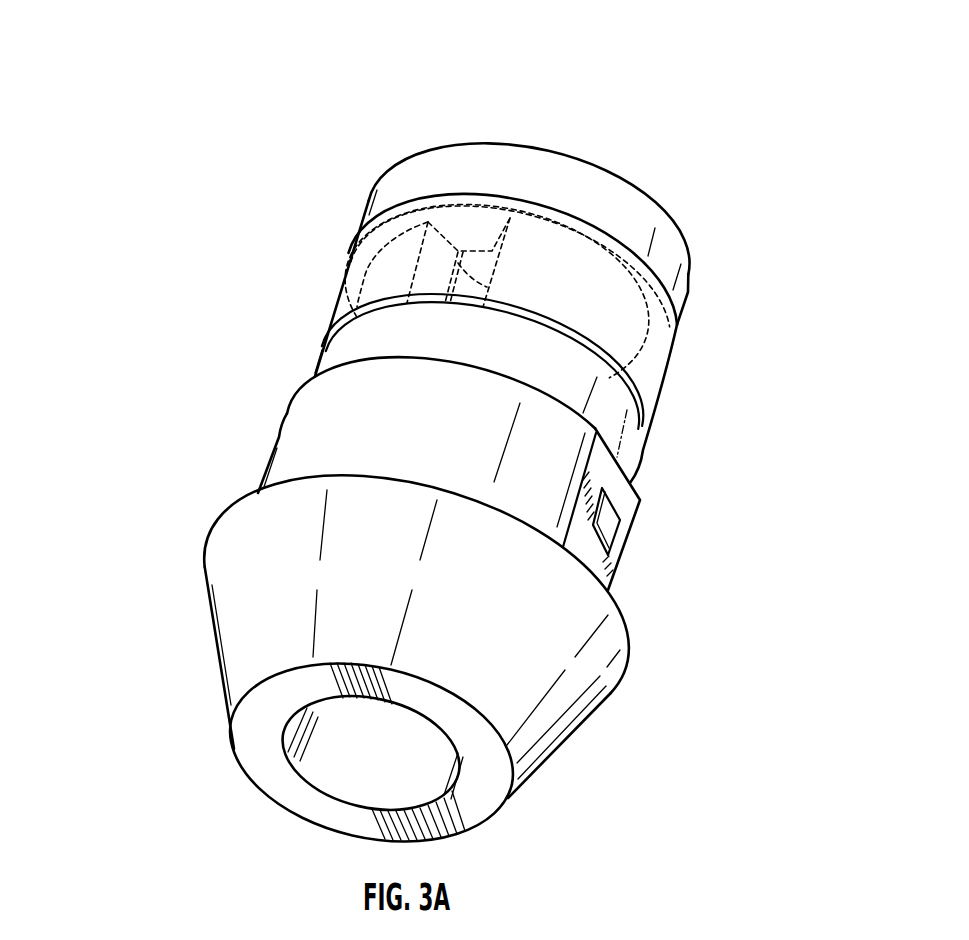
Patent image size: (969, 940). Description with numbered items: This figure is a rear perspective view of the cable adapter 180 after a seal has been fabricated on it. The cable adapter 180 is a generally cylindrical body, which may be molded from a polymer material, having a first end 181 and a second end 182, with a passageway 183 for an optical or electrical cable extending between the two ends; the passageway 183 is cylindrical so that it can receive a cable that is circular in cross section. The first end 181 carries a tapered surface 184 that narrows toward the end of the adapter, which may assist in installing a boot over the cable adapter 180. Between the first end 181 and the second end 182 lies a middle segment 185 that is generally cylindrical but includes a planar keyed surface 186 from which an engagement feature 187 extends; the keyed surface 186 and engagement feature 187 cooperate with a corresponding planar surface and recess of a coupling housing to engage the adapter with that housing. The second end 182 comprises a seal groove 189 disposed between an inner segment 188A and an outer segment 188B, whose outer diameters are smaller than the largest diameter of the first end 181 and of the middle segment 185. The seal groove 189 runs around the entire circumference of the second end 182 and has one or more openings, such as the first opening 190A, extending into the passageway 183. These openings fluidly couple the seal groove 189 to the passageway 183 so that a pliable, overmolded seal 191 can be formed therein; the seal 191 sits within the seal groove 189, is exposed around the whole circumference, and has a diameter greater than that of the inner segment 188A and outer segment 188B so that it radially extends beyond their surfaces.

The cable adapter 180 is at (303, 166).
The first end 181 is at (183, 784).
The second end 182 is at (633, 104).
The passageway 183 is at (338, 774).
The tapered surface 184 is at (232, 622).
The middle segment 185 is at (275, 406).
The keyed surface 186 is at (618, 568).
The engagement feature 187 is at (607, 523).
The inner segment 188A is at (603, 416).
The outer segment 188B is at (670, 247).
The seal groove 189 is at (552, 274).
The first opening 190A is at (459, 235).
The seal 191 is at (343, 268).